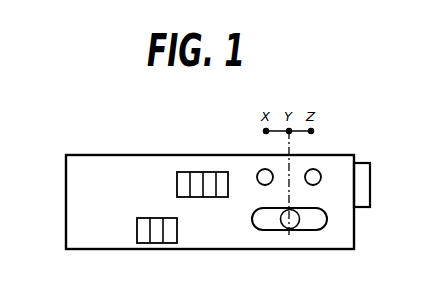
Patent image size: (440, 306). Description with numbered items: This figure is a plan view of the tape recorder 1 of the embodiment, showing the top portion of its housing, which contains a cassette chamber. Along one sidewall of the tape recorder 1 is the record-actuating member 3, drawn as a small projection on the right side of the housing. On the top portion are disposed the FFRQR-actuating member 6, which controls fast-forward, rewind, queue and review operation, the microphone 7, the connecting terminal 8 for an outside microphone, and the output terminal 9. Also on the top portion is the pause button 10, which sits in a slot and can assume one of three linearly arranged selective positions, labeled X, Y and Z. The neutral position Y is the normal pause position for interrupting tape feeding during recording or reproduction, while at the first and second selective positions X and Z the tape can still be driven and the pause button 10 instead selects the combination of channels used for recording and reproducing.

The tape recorder 1 is at (65, 190).
The record-actuating member 3 is at (372, 184).
The FFRQR-actuating member 6 is at (137, 233).
The microphone 7 is at (177, 185).
The connecting terminal 8 is at (258, 172).
The output terminal 9 is at (318, 170).
The pause button 10 is at (303, 218).